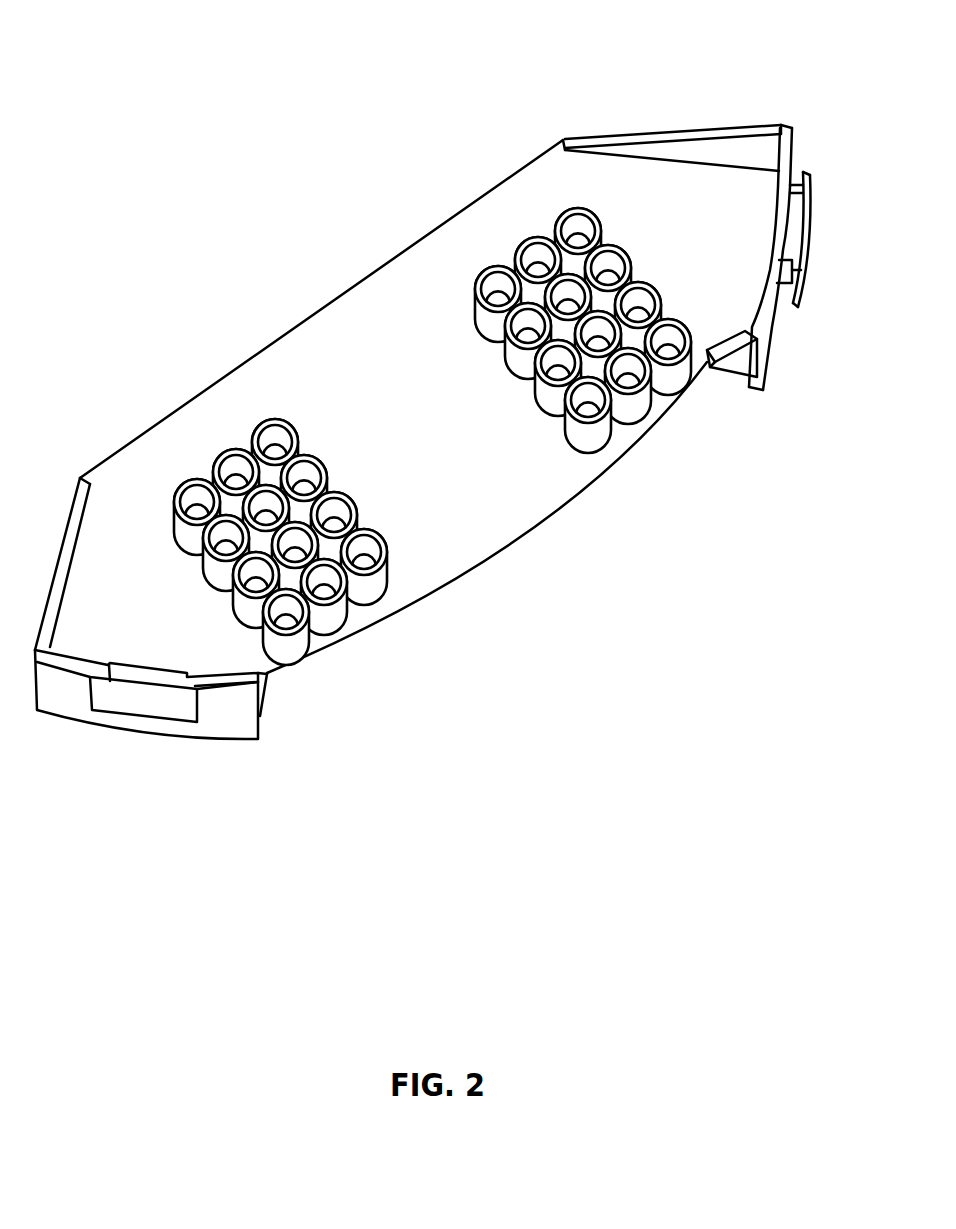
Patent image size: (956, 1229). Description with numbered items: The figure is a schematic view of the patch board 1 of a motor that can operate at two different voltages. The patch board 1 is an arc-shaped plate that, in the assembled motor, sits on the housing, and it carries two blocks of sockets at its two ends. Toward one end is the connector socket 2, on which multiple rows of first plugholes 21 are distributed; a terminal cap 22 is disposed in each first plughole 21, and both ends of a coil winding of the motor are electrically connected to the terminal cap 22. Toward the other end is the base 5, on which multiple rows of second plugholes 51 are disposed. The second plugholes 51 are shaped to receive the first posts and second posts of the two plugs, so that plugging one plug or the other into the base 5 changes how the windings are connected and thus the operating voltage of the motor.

The patch board 1 is at (493, 505).
The connector socket 2 is at (580, 330).
The first plughole 21 is at (482, 273).
The terminal cap 22 is at (601, 273).
The base 5 is at (426, 638).
The second plughole 51 is at (360, 553).